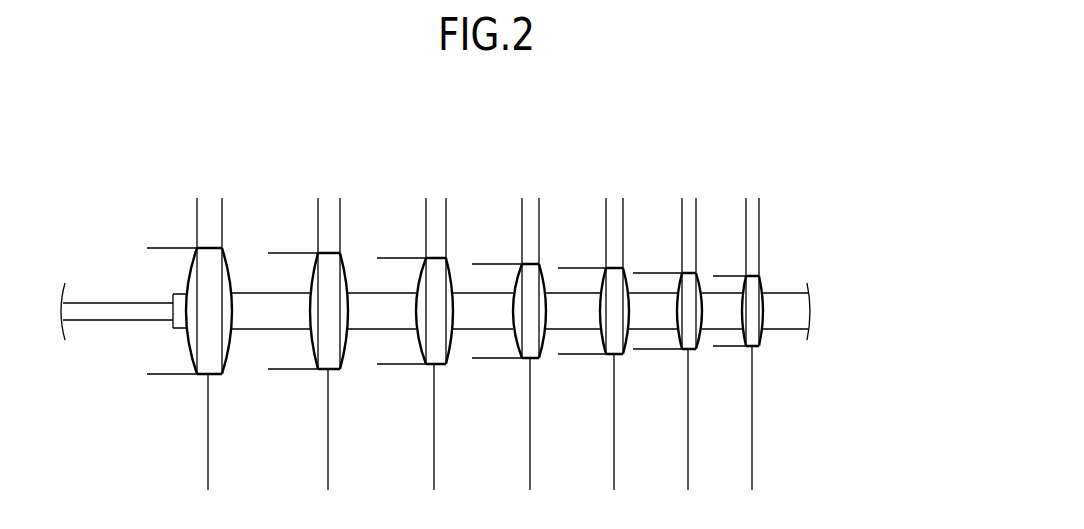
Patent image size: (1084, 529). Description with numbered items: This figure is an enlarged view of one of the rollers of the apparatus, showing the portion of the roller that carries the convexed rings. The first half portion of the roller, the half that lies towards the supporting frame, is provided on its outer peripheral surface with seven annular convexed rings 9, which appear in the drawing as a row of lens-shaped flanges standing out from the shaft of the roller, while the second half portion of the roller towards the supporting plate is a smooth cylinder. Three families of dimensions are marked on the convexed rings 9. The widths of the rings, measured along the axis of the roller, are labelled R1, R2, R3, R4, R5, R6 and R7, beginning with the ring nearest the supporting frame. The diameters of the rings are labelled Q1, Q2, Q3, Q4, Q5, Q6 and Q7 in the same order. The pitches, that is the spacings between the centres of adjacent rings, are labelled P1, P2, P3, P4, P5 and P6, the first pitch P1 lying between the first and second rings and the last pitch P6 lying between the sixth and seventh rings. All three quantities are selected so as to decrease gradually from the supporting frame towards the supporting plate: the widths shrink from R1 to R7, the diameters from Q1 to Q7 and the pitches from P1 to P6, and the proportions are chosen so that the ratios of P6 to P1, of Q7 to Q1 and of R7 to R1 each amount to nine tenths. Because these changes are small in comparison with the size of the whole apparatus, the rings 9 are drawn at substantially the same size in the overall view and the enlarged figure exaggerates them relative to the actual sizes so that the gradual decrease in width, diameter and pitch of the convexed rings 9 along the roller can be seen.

The annular convexed rings 9 is at (427, 364).
The width of first convexed ring R1 is at (167, 221).
The width of second convexed ring R2 is at (290, 221).
The width of third convexed ring R3 is at (397, 221).
The width of fourth convexed ring R4 is at (494, 221).
The width of fifth convexed ring R5 is at (580, 221).
The width of sixth convexed ring R6 is at (655, 221).
The width of seventh convexed ring R7 is at (720, 221).
The diameter of first convexed ring Q1 is at (158, 248).
The diameter of second convexed ring Q2 is at (278, 253).
The diameter of third convexed ring Q3 is at (387, 258).
The diameter of fourth convexed ring Q4 is at (483, 264).
The diameter of fifth convexed ring Q5 is at (568, 268).
The diameter of sixth convexed ring Q6 is at (643, 273).
The diameter of seventh convexed ring Q7 is at (724, 276).
The pitch between first and second convexed rings P1 is at (208, 465).
The pitch between second and third convexed rings P2 is at (434, 465).
The pitch between third and fourth convexed rings P3 is at (530, 465).
The pitch between fourth and fifth convexed rings P4 is at (530, 465).
The pitch between fifth and sixth convexed rings P5 is at (688, 465).
The pitch between sixth and seventh convexed rings P6 is at (688, 465).